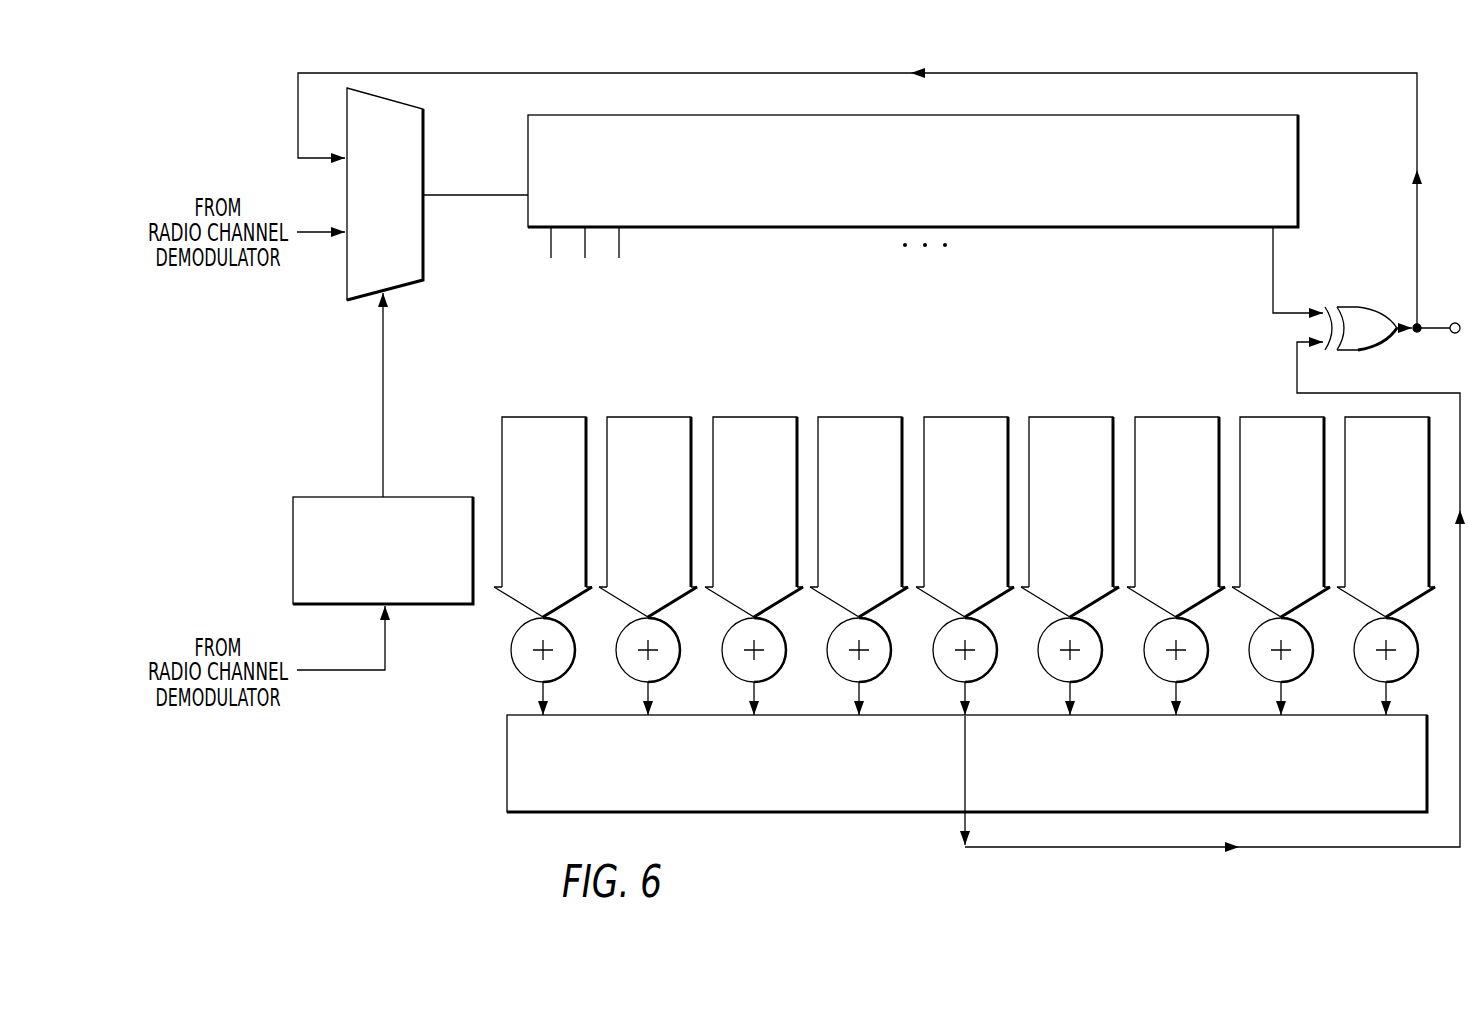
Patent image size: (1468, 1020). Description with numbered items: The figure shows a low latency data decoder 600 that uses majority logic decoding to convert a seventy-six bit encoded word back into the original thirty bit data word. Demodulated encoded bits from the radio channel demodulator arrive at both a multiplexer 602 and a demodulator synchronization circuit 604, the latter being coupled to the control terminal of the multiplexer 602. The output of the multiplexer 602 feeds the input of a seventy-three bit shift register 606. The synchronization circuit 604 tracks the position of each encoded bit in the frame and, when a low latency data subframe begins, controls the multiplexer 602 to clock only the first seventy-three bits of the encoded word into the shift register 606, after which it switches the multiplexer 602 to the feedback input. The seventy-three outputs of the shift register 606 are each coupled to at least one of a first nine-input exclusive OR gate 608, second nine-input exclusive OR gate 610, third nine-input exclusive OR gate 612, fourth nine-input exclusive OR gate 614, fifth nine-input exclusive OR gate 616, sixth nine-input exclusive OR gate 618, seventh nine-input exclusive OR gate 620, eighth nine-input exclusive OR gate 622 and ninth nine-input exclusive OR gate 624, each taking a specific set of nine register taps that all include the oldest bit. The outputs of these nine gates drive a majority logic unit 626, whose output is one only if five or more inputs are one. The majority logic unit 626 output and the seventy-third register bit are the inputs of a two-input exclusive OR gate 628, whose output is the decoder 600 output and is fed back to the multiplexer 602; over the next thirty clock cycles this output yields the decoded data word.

The low latency data decoder 600 is at (700, 52).
The multiplexer 602 is at (407, 100).
The demodulator synchronization circuit 604 is at (335, 496).
The 73 bit shift register 606 is at (1298, 146).
The first 9-input exclusive OR gate 608 is at (511, 647).
The second 9-input exclusive OR gate 610 is at (616, 655).
The third 9-input exclusive OR gate 612 is at (722, 655).
The fourth 9-input exclusive OR gate 614 is at (828, 655).
The fifth 9-input exclusive OR gate 616 is at (933, 657).
The sixth 9-input exclusive OR gate 618 is at (1039, 655).
The seventh 9-input exclusive OR gate 620 is at (1144, 657).
The eighth 9-input exclusive OR gate 622 is at (1249, 655).
The ninth 9-input exclusive OR gate 624 is at (1355, 657).
The majority logic unit 626 is at (507, 787).
The 2-input exclusive OR gate 628 is at (1372, 351).